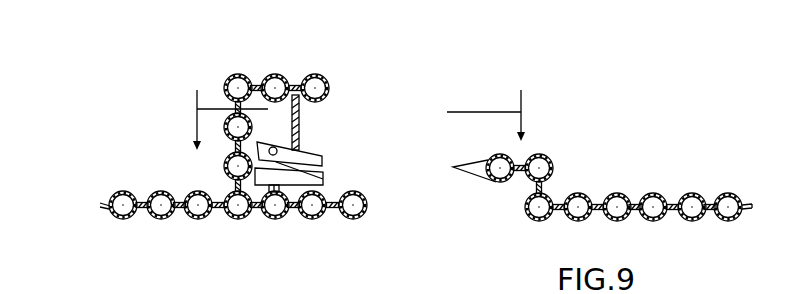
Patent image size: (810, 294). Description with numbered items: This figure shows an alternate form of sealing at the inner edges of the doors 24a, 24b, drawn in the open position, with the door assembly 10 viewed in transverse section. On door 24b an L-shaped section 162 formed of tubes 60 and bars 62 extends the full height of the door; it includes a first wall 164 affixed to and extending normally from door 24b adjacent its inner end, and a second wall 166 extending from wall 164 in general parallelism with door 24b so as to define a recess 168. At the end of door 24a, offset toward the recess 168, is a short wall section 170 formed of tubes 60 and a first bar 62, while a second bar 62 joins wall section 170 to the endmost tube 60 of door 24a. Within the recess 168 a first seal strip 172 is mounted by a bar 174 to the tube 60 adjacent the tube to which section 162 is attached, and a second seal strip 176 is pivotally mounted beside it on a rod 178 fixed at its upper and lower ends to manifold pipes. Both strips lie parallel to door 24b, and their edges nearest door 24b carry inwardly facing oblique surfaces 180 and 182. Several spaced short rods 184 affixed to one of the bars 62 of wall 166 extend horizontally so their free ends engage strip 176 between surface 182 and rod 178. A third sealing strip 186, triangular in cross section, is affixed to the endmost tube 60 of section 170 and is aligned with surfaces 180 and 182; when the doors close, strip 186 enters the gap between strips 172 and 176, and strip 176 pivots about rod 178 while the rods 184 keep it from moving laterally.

The bead chain 10 is at (360, 109).
The door 24a is at (650, 235).
The door 24b is at (100, 231).
The tube 60 is at (273, 74).
The bar 62 is at (293, 81).
The L-shaped section 162 is at (214, 63).
The first wall 164 is at (223, 132).
The second wall 166 is at (297, 53).
The recess 168 is at (267, 115).
The short wall section 170 is at (541, 186).
The first seal strip 172 is at (324, 181).
The bar 174 is at (298, 210).
The second seal strip 176 is at (284, 218).
The rod 178 is at (281, 145).
The oblique surface 180 is at (318, 172).
The oblique surface 182 is at (318, 153).
The rod 184 is at (300, 112).
The third sealing strip 186 is at (466, 157).